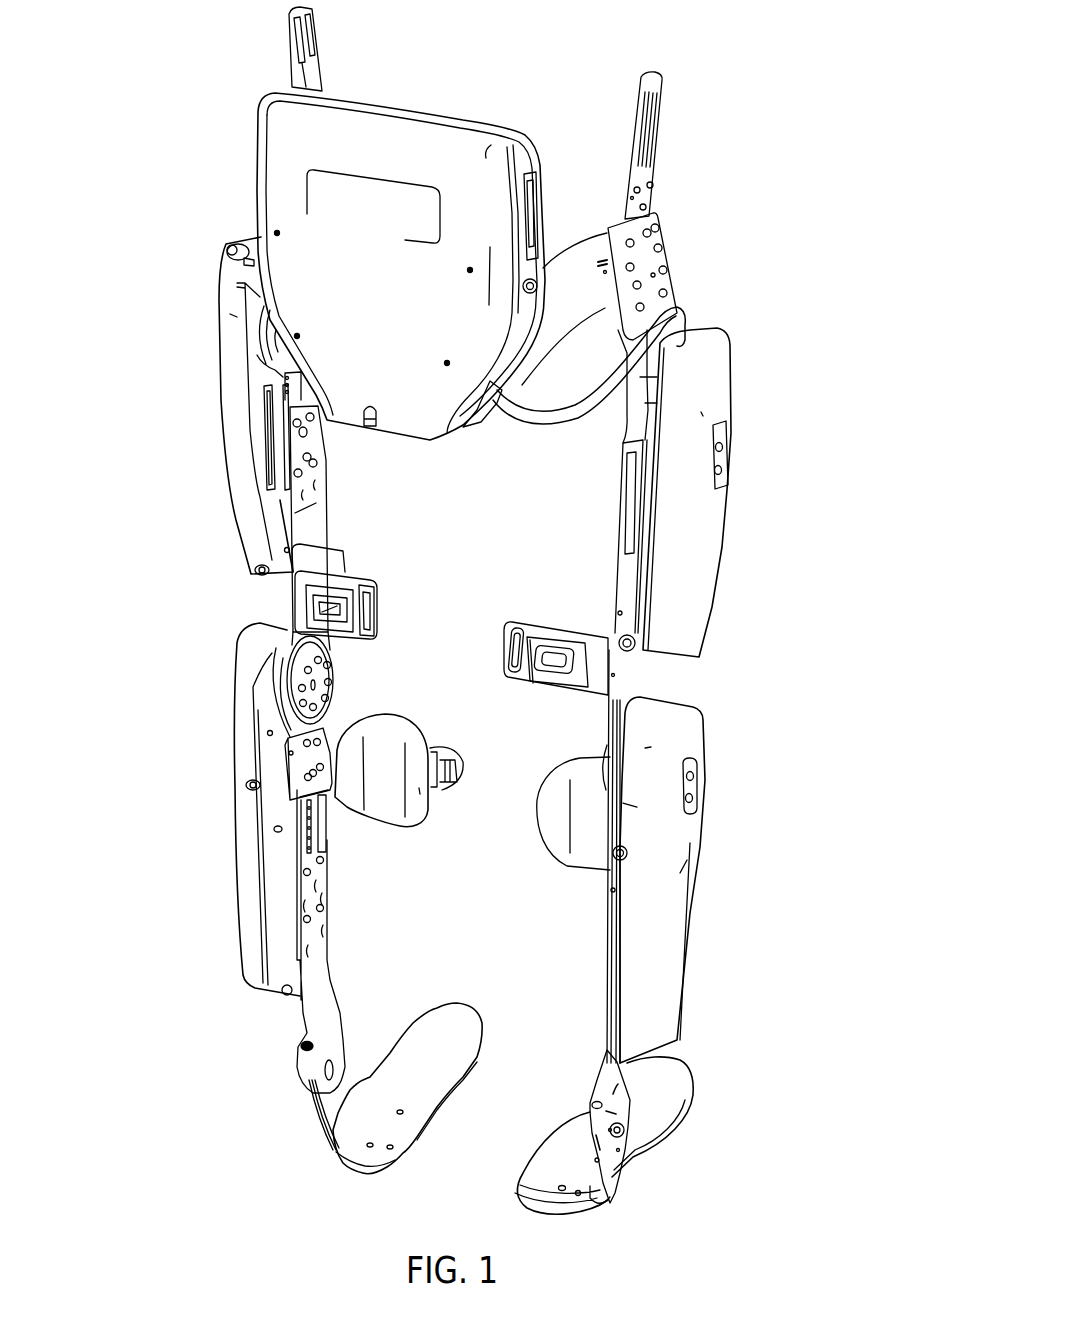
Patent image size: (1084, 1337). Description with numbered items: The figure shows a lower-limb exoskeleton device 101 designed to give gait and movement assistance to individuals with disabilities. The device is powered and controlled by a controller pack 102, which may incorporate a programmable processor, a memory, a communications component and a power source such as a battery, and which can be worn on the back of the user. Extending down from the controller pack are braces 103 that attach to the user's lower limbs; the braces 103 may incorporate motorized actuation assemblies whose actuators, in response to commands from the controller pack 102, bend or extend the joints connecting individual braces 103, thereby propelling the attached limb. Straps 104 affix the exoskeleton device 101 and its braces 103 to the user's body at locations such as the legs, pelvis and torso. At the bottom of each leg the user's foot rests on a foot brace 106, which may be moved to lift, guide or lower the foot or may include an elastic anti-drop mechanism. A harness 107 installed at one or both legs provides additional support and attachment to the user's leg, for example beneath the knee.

The exoskeleton device 101 is at (714, 220).
The controller pack 102 is at (238, 189).
The braces 103 is at (705, 836).
The straps 104 is at (307, 603).
The foot brace 106 is at (363, 1120).
The harness 107 is at (383, 828).